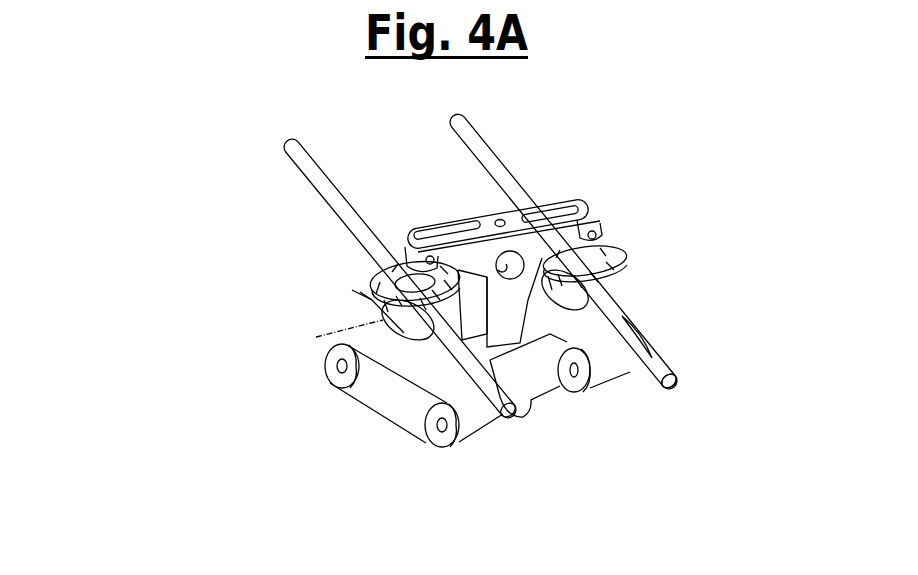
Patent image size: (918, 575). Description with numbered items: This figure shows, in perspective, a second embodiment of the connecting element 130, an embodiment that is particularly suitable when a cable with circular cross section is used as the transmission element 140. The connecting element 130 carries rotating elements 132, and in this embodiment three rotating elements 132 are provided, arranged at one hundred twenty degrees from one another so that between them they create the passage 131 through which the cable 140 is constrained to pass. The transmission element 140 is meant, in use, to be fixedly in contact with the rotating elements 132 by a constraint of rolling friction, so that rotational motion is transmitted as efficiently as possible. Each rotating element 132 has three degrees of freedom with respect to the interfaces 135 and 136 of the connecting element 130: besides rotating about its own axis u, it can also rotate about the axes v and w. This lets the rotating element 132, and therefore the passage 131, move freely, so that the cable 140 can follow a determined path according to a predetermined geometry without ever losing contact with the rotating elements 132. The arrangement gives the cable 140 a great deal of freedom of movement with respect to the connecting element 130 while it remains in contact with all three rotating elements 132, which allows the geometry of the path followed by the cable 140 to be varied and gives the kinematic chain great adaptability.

The connecting element 130 is at (178, 203).
The passage 131 is at (458, 336).
The rotating element 132 is at (386, 291).
The interface 135 is at (570, 423).
The interface 136 is at (349, 278).
The transmission element 140 is at (667, 368).
The own axis of the rotating element u is at (349, 323).
The axis v is at (403, 232).
The axis w is at (502, 220).